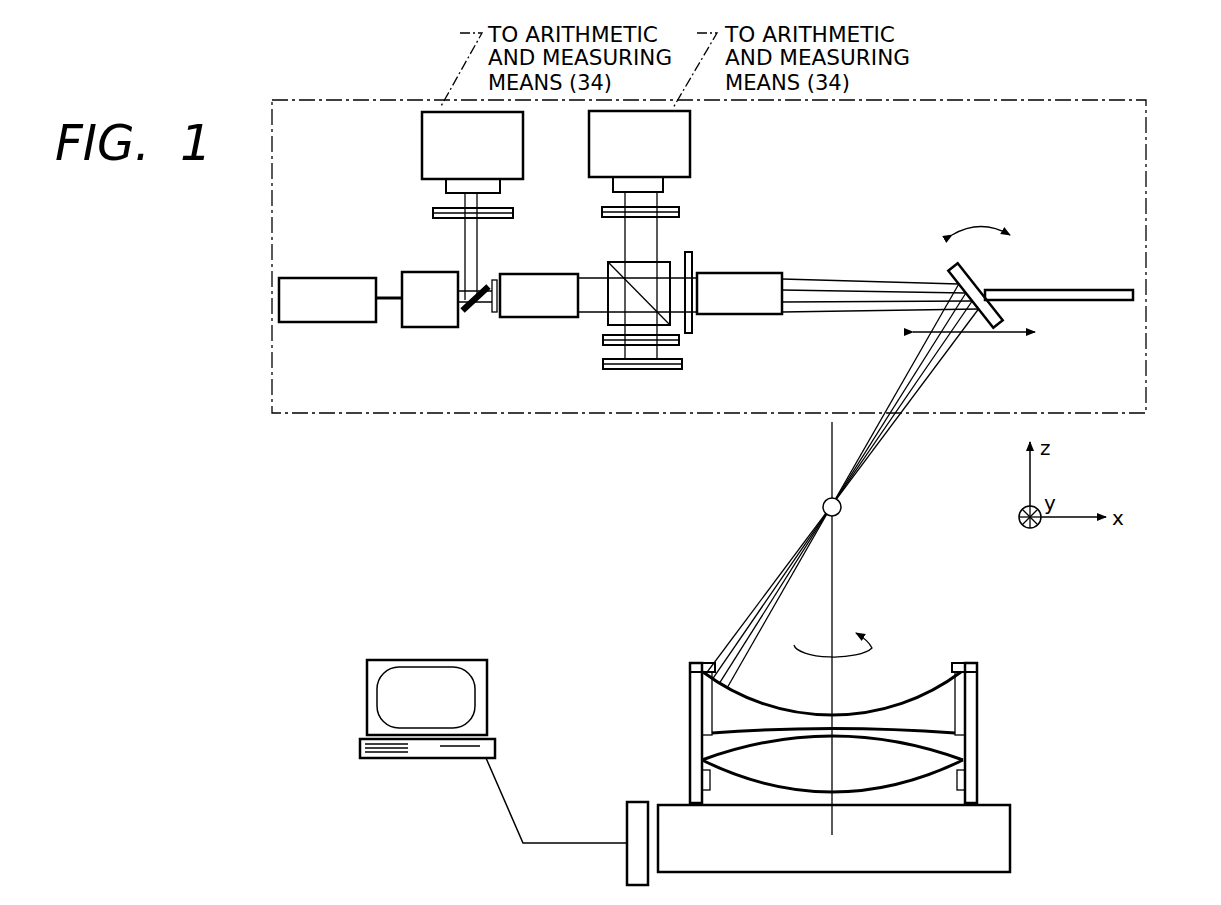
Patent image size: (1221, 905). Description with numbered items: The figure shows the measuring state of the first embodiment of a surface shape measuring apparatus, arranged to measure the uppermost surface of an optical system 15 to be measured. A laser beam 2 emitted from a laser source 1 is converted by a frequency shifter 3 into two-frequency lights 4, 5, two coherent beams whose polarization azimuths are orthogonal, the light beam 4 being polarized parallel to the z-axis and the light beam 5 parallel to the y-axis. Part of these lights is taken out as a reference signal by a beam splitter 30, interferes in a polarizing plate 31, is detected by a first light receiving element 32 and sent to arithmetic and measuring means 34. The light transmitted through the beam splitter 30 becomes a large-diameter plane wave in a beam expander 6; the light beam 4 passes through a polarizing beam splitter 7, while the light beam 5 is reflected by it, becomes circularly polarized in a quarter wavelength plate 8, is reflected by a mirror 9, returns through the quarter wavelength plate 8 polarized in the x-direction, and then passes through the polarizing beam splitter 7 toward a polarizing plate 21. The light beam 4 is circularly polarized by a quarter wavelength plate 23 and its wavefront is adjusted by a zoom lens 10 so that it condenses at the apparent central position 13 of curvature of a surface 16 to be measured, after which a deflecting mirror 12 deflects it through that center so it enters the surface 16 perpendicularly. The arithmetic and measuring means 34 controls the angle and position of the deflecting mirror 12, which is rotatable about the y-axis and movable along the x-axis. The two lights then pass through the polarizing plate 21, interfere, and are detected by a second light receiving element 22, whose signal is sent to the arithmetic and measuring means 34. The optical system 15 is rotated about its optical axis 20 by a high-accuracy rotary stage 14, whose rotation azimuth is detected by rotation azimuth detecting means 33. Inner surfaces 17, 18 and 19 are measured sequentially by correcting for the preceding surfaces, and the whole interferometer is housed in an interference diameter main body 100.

The laser source 1 is at (326, 322).
The laser beam 2 is at (388, 296).
The frequency shifter 3 is at (415, 272).
The light beam 4 is at (466, 253).
The light beam 5 is at (470, 312).
The beam expander 6 is at (495, 318).
The polarizing beam splitter 7 is at (608, 268).
The quarter wavelength plate 8 is at (603, 340).
The mirror 9 is at (603, 364).
The zoom lens 10 is at (765, 273).
The deflecting mirror 12 is at (998, 312).
The apparent central position of curvature 13 is at (842, 507).
The rotary stage 14 is at (1010, 845).
The optical system to be measured 15 is at (977, 668).
The surface to be measured 16 is at (940, 680).
The surface 17 is at (936, 730).
The surface 18 is at (936, 752).
The surface 19 is at (940, 770).
The optical axis 20 is at (832, 468).
The polarizing plate 21 is at (679, 212).
The second light receiving element 22 is at (690, 133).
The quarter wavelength plate 23 is at (693, 257).
The beam splitter 30 is at (487, 290).
The polarizing plate 31 is at (433, 213).
The first light receiving element 32 is at (422, 130).
The rotation azimuth detecting means 33 is at (628, 862).
The arithmetic and measuring means 34 is at (373, 663).
The interference diameter main body 100 is at (1127, 127).